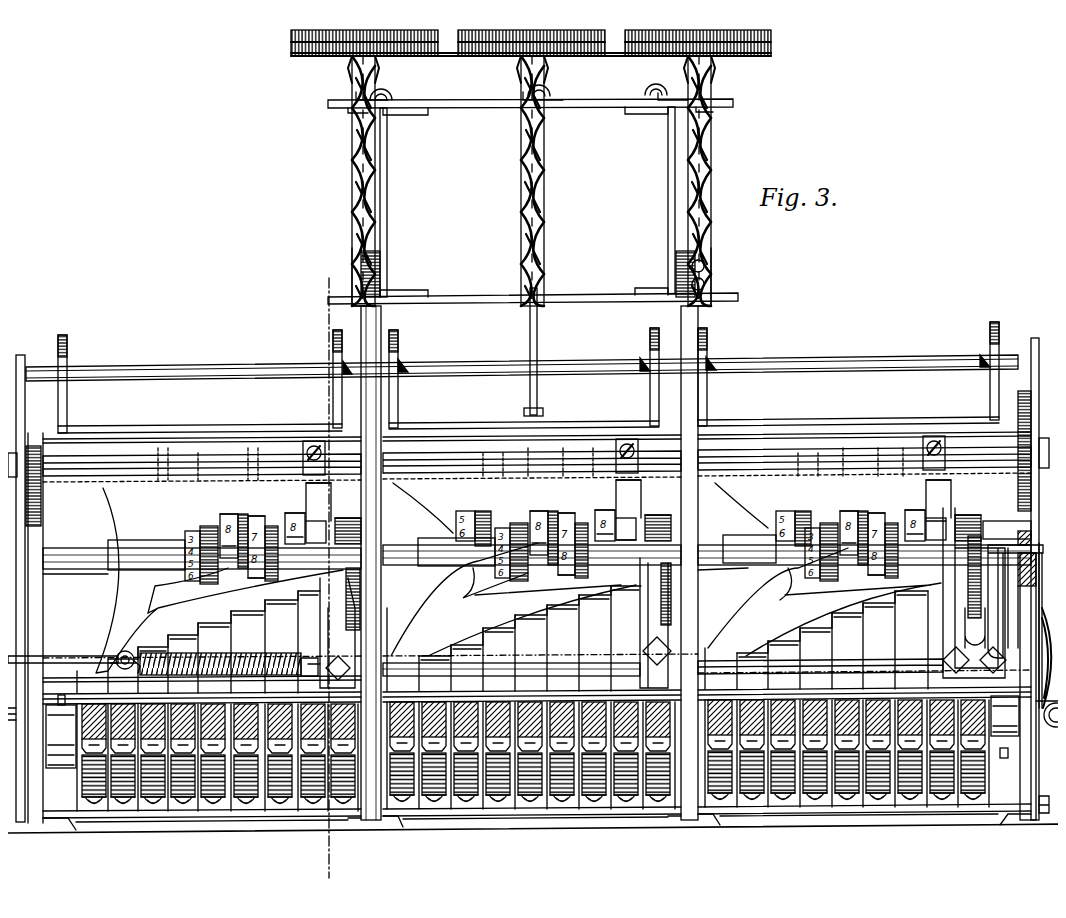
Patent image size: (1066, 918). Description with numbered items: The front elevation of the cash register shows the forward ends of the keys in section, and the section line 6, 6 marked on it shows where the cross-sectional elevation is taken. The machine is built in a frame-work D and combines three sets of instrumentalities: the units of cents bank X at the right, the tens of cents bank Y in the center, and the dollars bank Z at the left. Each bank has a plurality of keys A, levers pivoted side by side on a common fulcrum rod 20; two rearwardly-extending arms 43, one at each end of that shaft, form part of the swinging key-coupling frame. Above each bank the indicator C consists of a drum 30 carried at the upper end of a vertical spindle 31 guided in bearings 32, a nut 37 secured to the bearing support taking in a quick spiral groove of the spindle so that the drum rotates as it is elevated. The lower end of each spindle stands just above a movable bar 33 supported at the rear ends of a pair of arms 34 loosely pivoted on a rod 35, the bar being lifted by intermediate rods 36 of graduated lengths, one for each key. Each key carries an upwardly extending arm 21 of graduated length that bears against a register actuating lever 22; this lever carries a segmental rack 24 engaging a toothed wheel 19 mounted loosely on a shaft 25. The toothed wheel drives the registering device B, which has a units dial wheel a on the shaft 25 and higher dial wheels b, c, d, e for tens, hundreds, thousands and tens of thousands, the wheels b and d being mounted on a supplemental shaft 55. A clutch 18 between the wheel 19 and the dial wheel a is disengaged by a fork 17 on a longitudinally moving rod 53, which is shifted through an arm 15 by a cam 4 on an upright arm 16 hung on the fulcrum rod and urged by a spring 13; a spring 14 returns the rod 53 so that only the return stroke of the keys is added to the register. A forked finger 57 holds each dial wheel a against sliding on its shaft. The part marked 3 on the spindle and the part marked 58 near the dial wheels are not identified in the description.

The twisted screw shaft 3 is at (703, 140).
The cam 4 is at (1035, 552).
The section line 6 is at (312, 271).
The spring 13 is at (1042, 650).
The spring 14 is at (164, 671).
The arm 15 is at (1028, 537).
The upright arm 16 is at (1033, 588).
The fork 17 is at (320, 600).
The clutch 18 is at (338, 510).
The toothed wheel 19 is at (655, 507).
The fulcrum rod 20 is at (1046, 720).
The upwardly extending arm 21 is at (502, 639).
The register actuating lever 22 is at (518, 578).
The segmental rack 24 is at (960, 560).
The shaft 25 is at (50, 541).
The drum 30 is at (284, 37).
The vertical spindle 31 is at (348, 73).
The bearings 32 is at (320, 96).
The movable bar 33 is at (198, 420).
The arms 34 is at (59, 390).
The rod 35 is at (847, 350).
The intermediate rods 36 is at (240, 444).
The nut 37 is at (373, 88).
The rearwardly-extending arms 43 is at (532, 731).
The clutch disengaging rod 53 is at (312, 655).
The supplemental shaft 55 is at (395, 575).
The forked finger 57 is at (298, 490).
The block 58 is at (627, 532).
The keys A is at (537, 752).
The registering device B is at (563, 506).
The indicator C is at (596, 66).
The frame-work D is at (35, 608).
The units of cents bank X is at (859, 815).
The tens of cents bank Y is at (535, 820).
The dollars bank Z is at (212, 822).
The units dial wheel a is at (272, 505).
The tens dial wheel b is at (870, 567).
The hundreds dial wheel c is at (208, 511).
The thousands dial wheel d is at (178, 526).
The tens of thousands dial wheel e is at (452, 510).